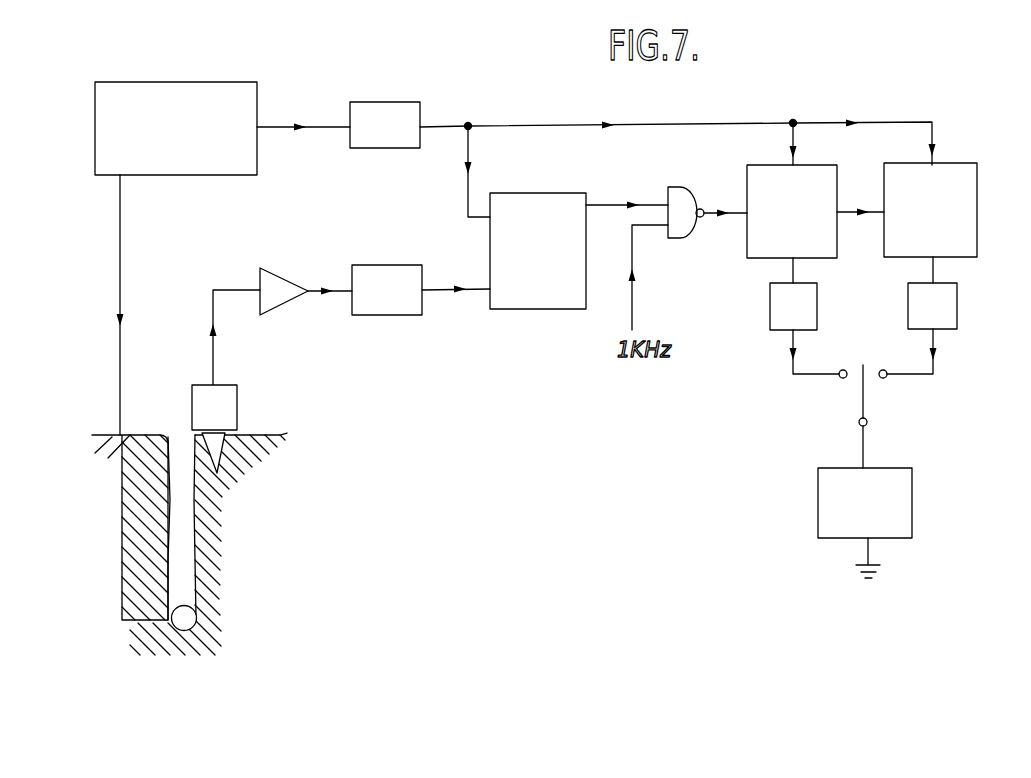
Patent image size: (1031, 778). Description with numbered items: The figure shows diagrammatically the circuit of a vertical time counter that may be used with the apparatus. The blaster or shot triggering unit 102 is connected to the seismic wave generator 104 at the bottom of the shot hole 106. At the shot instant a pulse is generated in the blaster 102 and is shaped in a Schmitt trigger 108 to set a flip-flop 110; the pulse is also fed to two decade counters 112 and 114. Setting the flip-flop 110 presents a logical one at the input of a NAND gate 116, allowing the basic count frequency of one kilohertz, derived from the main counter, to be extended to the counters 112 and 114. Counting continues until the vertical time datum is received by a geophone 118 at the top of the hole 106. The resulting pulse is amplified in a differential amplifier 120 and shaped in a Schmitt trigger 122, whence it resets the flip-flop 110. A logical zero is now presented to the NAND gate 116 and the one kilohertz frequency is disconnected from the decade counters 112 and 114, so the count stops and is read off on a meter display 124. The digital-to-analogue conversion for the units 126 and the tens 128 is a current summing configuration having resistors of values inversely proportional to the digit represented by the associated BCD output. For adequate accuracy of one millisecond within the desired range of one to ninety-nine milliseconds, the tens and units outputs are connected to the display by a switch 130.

The blaster 102 is at (176, 72).
The seismic wave generator 104 is at (196, 613).
The shot hole 106 is at (183, 530).
The Schmitt trigger 108 is at (384, 112).
The flip-flop 110 is at (530, 210).
The decade counter 112 is at (819, 177).
The decade counter 114 is at (963, 180).
The NAND gate 116 is at (679, 200).
The geophone 118 is at (228, 406).
The differential amplifier 120 is at (276, 306).
The Schmitt trigger 122 is at (378, 310).
The meter display 124 is at (836, 505).
The units conversion unit 126 is at (788, 309).
The tens conversion unit 128 is at (945, 317).
The switch 130 is at (865, 398).